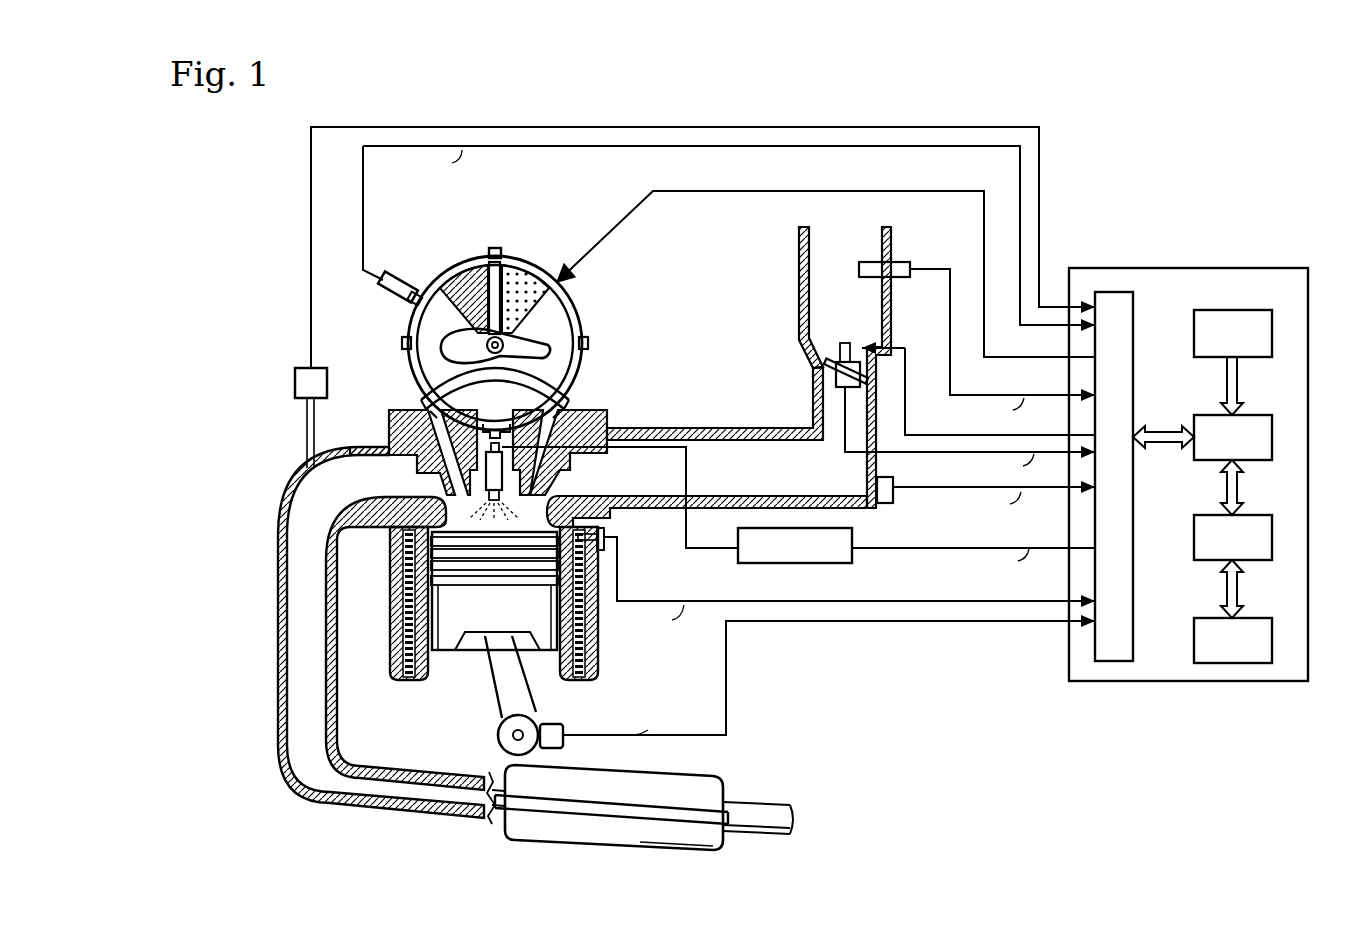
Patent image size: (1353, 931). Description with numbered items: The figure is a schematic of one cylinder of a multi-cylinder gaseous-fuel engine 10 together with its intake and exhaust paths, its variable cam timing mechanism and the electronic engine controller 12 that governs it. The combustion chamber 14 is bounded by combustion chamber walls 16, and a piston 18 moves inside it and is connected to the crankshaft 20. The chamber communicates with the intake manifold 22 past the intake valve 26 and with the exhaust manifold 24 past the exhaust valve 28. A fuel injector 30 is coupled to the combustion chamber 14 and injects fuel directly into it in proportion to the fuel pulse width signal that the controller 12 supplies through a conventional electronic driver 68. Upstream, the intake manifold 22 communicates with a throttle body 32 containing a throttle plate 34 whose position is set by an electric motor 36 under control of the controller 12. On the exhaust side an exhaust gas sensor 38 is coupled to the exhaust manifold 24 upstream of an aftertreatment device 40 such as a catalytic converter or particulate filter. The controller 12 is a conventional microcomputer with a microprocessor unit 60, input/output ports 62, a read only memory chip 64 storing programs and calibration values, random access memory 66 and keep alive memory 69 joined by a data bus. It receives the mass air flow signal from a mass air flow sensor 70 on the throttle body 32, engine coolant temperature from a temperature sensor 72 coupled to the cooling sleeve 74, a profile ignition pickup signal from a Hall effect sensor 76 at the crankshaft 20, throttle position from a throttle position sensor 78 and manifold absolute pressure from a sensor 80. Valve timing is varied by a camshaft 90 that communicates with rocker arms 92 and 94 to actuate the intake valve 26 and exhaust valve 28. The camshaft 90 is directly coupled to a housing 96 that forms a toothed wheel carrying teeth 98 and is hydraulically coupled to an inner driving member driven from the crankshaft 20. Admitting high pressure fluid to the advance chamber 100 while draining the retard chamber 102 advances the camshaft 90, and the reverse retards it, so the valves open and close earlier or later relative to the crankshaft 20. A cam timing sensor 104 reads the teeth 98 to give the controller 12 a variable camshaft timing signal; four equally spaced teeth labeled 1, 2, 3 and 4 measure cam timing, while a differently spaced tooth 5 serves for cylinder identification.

The tooth 1 is at (490, 252).
The tooth 2 is at (588, 343).
The tooth 3 is at (503, 431).
The tooth 4 is at (402, 342).
The tooth 5 is at (410, 299).
The engine 10 is at (1197, 168).
The electronic engine controller 12 is at (1268, 268).
The combustion chamber 14 is at (455, 520).
The combustion chamber walls 16 is at (432, 678).
The piston 18 is at (492, 620).
The crankshaft 20 is at (500, 737).
The intake manifold 22 is at (790, 481).
The exhaust manifold 24 is at (300, 508).
The intake valve 26 is at (560, 488).
The exhaust valve 28 is at (440, 488).
The fuel injector 30 is at (482, 435).
The throttle body 32 is at (819, 416).
The throttle plate 34 is at (831, 364).
The electric motor 36 is at (848, 342).
The exhaust gas sensor 38 is at (297, 368).
The aftertreatment device 40 is at (582, 768).
The microprocessor unit 60 is at (1250, 415).
The input/output ports 62 is at (1135, 332).
The read only memory chip 64 is at (806, 284).
The random access memory 66 is at (1248, 515).
The electronic driver 68 is at (854, 542).
The keep alive memory 69 is at (1248, 618).
The mass air flow sensor 70 is at (900, 262).
The temperature sensor 72 is at (606, 544).
The cooling sleeve 74 is at (598, 640).
The Hall effect sensor 76 is at (556, 726).
The throttle position sensor 78 is at (830, 378).
The manifold absolute pressure sensor 80 is at (896, 488).
The camshaft 90 is at (462, 348).
The rocker arm 92 is at (422, 405).
The rocker arm 94 is at (567, 405).
The housing 96 is at (412, 383).
The teeth 98 is at (578, 304).
The advance chamber 100 is at (464, 278).
The retard chamber 102 is at (519, 282).
The cam timing sensor 104 is at (386, 291).